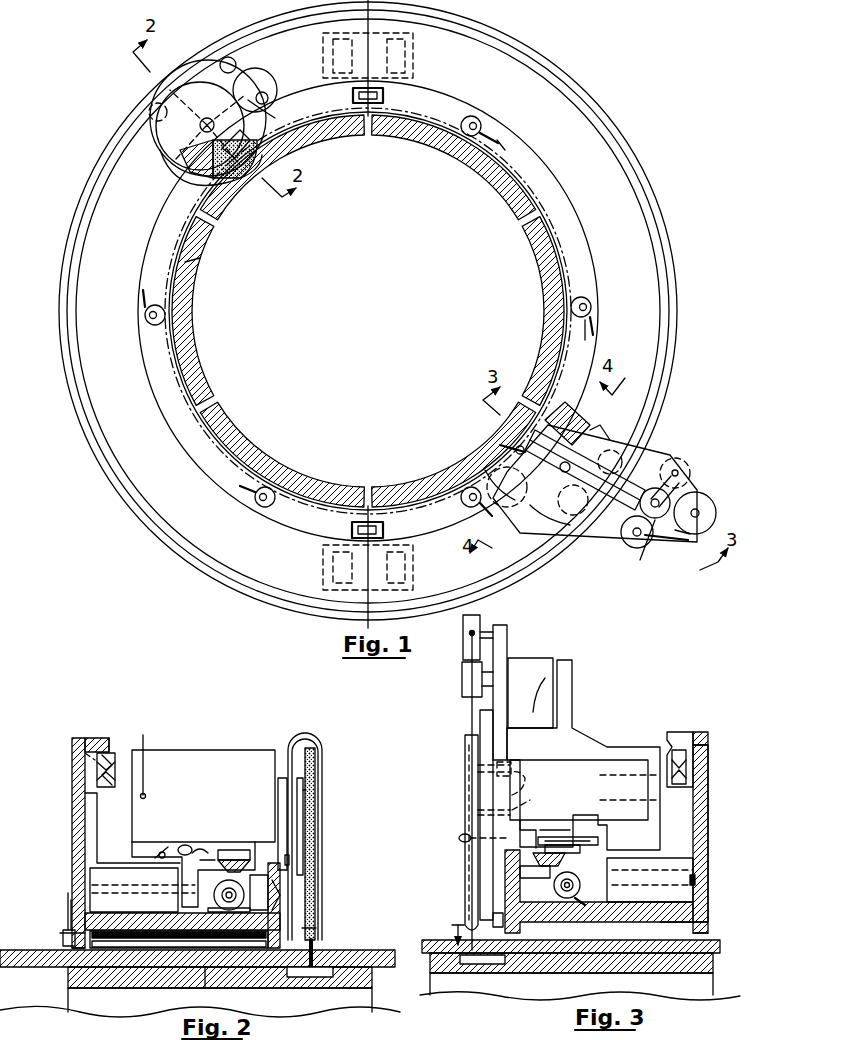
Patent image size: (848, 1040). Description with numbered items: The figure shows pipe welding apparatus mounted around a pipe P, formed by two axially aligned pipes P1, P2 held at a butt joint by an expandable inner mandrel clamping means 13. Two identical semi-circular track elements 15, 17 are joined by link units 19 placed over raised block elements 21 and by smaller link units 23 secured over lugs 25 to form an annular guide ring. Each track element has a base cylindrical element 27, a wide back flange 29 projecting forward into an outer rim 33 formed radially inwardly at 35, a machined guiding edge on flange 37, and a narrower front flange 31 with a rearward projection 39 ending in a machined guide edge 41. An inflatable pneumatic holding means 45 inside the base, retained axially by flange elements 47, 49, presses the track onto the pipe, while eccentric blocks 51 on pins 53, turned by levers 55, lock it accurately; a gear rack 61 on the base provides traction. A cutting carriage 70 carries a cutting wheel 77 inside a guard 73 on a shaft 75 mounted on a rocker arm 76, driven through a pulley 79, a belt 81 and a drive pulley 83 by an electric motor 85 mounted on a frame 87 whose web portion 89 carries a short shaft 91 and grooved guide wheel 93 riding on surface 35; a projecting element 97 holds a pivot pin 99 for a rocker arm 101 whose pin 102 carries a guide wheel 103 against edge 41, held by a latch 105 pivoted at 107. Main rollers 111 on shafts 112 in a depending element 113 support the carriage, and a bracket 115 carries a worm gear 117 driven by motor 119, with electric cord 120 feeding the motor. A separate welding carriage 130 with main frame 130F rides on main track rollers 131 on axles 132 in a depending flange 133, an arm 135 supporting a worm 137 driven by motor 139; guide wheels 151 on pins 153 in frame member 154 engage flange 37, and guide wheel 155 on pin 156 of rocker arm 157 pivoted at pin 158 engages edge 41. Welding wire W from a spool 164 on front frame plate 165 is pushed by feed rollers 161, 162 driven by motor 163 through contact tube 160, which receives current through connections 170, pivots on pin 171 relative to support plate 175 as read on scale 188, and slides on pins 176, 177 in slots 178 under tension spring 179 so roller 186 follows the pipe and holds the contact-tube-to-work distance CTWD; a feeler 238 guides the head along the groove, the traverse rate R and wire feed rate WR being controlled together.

In FIG. 1, the clamping means 13 is at (478, 162).
In FIG. 2, the clamping means 13 is at (92, 990).
In FIG. 3, the clamping means 13 is at (580, 976).
In FIG. 1, the track element 15 is at (615, 112).
In FIG. 3, the track element 15 is at (710, 742).
In FIG. 1, the track element 17 is at (72, 200).
In FIG. 2, the track element 17 is at (54, 799).
In FIG. 1, the link units 19 is at (413, 50).
In FIG. 1, the motor 21 is at (333, 50).
In FIG. 1, the link units 23 is at (384, 95).
In FIG. 1, the lugs 25 is at (353, 95).
In FIG. 1, the base cylindrical element 27 is at (180, 412).
In FIG. 2, the base cylindrical element 27 is at (66, 935).
In FIG. 3, the base cylindrical element 27 is at (660, 923).
In FIG. 2, the vertical flange element 29 is at (72, 781).
In FIG. 3, the vertical flange element 29 is at (709, 805).
In FIG. 2, the narrower flange 31 is at (318, 926).
In FIG. 3, the narrower flange 31 is at (535, 875).
In FIG. 2, the outer rim 33 is at (82, 738).
In FIG. 2, the annular guiding element 35 is at (110, 758).
In FIG. 2, the flange 37 is at (108, 740).
In FIG. 3, the flange 37 is at (670, 750).
In FIG. 2, the horizontal rearward projection 39 is at (258, 858).
In FIG. 3, the horizontal rearward projection 39 is at (532, 855).
In FIG. 2, the guide edge 41 is at (238, 848).
In FIG. 3, the guide edge 41 is at (534, 824).
In FIG. 1, the pneumatic holding means 45 is at (192, 258).
In FIG. 2, the pneumatic holding means 45 is at (152, 950).
In FIG. 2, the flange element 47 is at (72, 946).
In FIG. 3, the flange element 47 is at (710, 930).
In FIG. 2, the flange element 49 is at (270, 985).
In FIG. 3, the flange element 49 is at (522, 928).
In FIG. 1, the eccentric blocks 51 is at (478, 120).
In FIG. 2, the eccentric blocks 51 is at (66, 930).
In FIG. 1, the pins 53 is at (486, 122).
In FIG. 2, the pins 53 is at (66, 905).
In FIG. 1, the lever 55 is at (500, 145).
In FIG. 2, the lever 55 is at (66, 895).
In FIG. 2, the gear rack 61 is at (268, 925).
In FIG. 3, the gear rack 61 is at (553, 895).
In FIG. 1, the carriage 70 is at (212, 108).
In FIG. 2, the carriage 70 is at (256, 738).
In FIG. 1, the guard 73 is at (162, 150).
In FIG. 2, the guard 73 is at (320, 835).
In FIG. 2, the shaft element 75 is at (316, 855).
In FIG. 1, the rocker arm 76 is at (236, 76).
In FIG. 2, the rocker arm 76 is at (282, 812).
In FIG. 1, the cutting wheel 77 is at (250, 170).
In FIG. 2, the cutting wheel 77 is at (318, 815).
In FIG. 2, the pulley 79 is at (282, 870).
In FIG. 2, the belt 81 is at (304, 805).
In FIG. 2, the drive pulley 83 is at (305, 785).
In FIG. 1, the electric motor 85 is at (190, 62).
In FIG. 2, the electric motor 85 is at (190, 750).
In FIG. 2, the frame 87 is at (90, 812).
In FIG. 2, the upstanding web portion 89 is at (98, 835).
In FIG. 2, the short shaft 91 is at (95, 768).
In FIG. 1, the guide wheel 93 is at (228, 56).
In FIG. 2, the guide wheel 93 is at (82, 752).
In FIG. 2, the horizontally projecting element 97 is at (148, 840).
In FIG. 2, the pivot pin 99 is at (202, 842).
In FIG. 2, the rocker arm 101 is at (221, 840).
In FIG. 2, the pin 102 is at (230, 840).
In FIG. 2, the guide wheel 103 is at (268, 890).
In FIG. 2, the latch 105 is at (172, 843).
In FIG. 2, the pivot 107 is at (134, 888).
In FIG. 1, the main rollers 111 is at (546, 467).
In FIG. 2, the main rollers 111 is at (120, 901).
In FIG. 2, the shafts 112 is at (178, 905).
In FIG. 2, the depending element 113 is at (180, 884).
In FIG. 2, the bracket member 115 is at (222, 886).
In FIG. 1, the worm gear 117 is at (180, 178).
In FIG. 2, the worm gear 117 is at (275, 905).
In FIG. 1, the motor 119 is at (262, 92).
In FIG. 2, the electric connection 120 is at (146, 736).
In FIG. 1, the carriage 130 is at (603, 489).
In FIG. 3, the carriage 130 is at (592, 730).
In FIG. 1, the main carriage frame 130F is at (700, 490).
In FIG. 3, the main carriage frame 130F is at (592, 756).
In FIG. 1, the main track rollers 131 is at (600, 428).
In FIG. 3, the main track rollers 131 is at (695, 860).
In FIG. 3, the axles 132 is at (697, 878).
In FIG. 3, the depending flange 133 is at (652, 870).
In FIG. 3, the arm 135 is at (588, 910).
In FIG. 1, the worm 137 is at (575, 418).
In FIG. 1, the motor 139 is at (500, 502).
In FIG. 1, the guide wheels 151 is at (660, 450).
In FIG. 3, the guide wheels 151 is at (690, 775).
In FIG. 3, the pin 153 is at (630, 771).
In FIG. 3, the frame member 154 is at (630, 793).
In FIG. 3, the guide wheel 155 is at (580, 836).
In FIG. 3, the pin 156 is at (560, 830).
In FIG. 3, the rocker arm 157 is at (590, 838).
In FIG. 3, the pin 158 is at (595, 843).
In FIG. 1, the welding contact tube 160 is at (572, 505).
In FIG. 3, the welding contact tube 160 is at (462, 798).
In FIG. 1, the feed roller 161 is at (627, 548).
In FIG. 1, the feed roller 162 is at (652, 488).
In FIG. 3, the feed roller 162 is at (462, 685).
In FIG. 1, the electric motor drive 163 is at (690, 466).
In FIG. 3, the electric motor drive 163 is at (545, 658).
In FIG. 1, the spool 164 is at (716, 513).
In FIG. 3, the spool 164 is at (482, 617).
In FIG. 3, the front frame plate 165 is at (508, 642).
In FIG. 1, the connections 170 is at (578, 520).
In FIG. 3, the connections 170 is at (466, 755).
In FIG. 1, the pin 171 is at (600, 455).
In FIG. 3, the pin 171 is at (459, 838).
In FIG. 1, the support plate 175 is at (645, 548).
In FIG. 3, the support plate 175 is at (486, 882).
In FIG. 3, the pin 176 is at (503, 762).
In FIG. 3, the pin 177 is at (538, 796).
In FIG. 3, the slots 178 is at (534, 779).
In FIG. 1, the tension spring 179 is at (620, 462).
In FIG. 1, the roller 186 is at (510, 445).
In FIG. 3, the roller 186 is at (490, 915).
In FIG. 1, the scale 188 is at (600, 545).
In FIG. 1, the feeler 238 is at (515, 450).
In FIG. 1, the pipe P is at (565, 238).
In FIG. 2, the pipe P is at (395, 986).
In FIG. 2, the pipe P1 is at (200, 1002).
In FIG. 3, the pipe P1 is at (581, 928).
In FIG. 2, the pipe P2 is at (350, 953).
In FIG. 3, the pipe P2 is at (422, 960).
In FIG. 1, the rate of traverse R is at (560, 570).
In FIG. 1, the welding wire W is at (716, 560).
In FIG. 3, the welding wire W is at (468, 718).
In FIG. 1, the rate of feeding welding material WR is at (660, 545).
In FIG. 3, the contact-tube-to-work distance CTWD is at (436, 933).